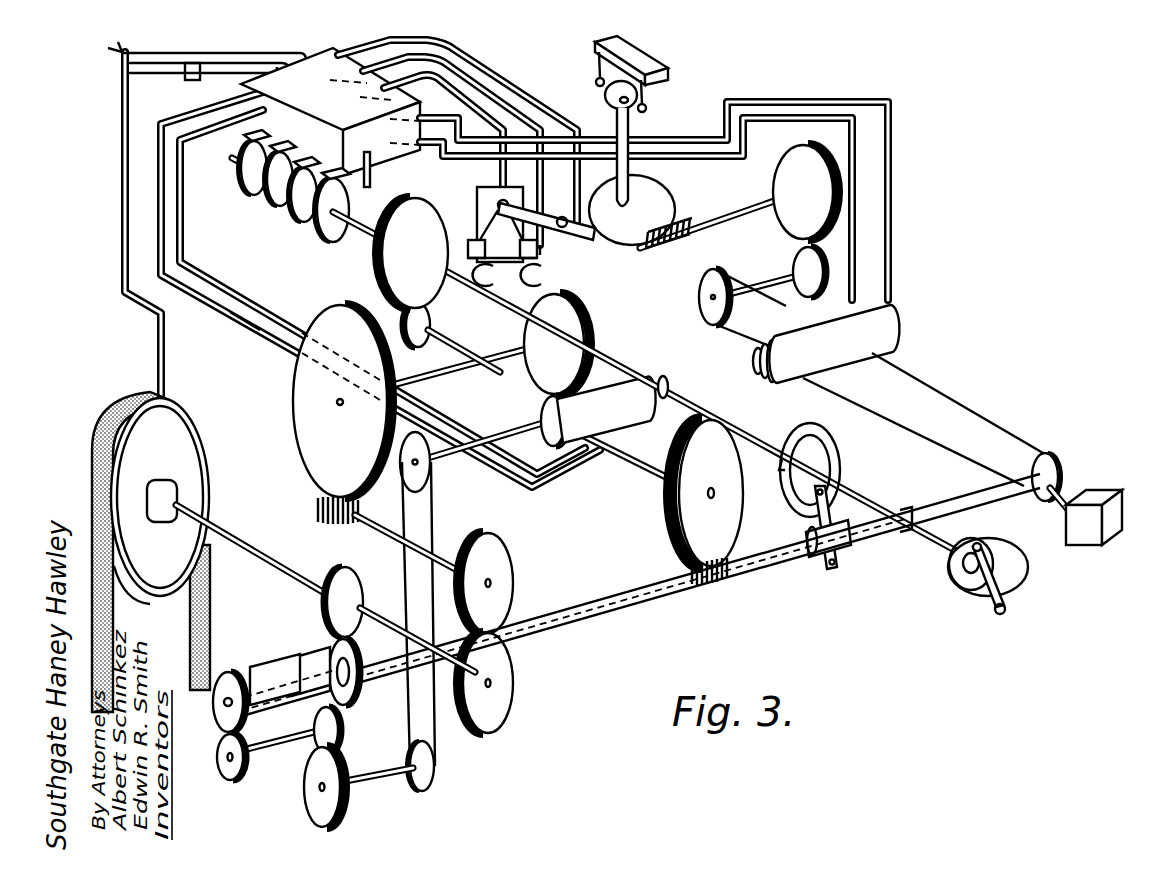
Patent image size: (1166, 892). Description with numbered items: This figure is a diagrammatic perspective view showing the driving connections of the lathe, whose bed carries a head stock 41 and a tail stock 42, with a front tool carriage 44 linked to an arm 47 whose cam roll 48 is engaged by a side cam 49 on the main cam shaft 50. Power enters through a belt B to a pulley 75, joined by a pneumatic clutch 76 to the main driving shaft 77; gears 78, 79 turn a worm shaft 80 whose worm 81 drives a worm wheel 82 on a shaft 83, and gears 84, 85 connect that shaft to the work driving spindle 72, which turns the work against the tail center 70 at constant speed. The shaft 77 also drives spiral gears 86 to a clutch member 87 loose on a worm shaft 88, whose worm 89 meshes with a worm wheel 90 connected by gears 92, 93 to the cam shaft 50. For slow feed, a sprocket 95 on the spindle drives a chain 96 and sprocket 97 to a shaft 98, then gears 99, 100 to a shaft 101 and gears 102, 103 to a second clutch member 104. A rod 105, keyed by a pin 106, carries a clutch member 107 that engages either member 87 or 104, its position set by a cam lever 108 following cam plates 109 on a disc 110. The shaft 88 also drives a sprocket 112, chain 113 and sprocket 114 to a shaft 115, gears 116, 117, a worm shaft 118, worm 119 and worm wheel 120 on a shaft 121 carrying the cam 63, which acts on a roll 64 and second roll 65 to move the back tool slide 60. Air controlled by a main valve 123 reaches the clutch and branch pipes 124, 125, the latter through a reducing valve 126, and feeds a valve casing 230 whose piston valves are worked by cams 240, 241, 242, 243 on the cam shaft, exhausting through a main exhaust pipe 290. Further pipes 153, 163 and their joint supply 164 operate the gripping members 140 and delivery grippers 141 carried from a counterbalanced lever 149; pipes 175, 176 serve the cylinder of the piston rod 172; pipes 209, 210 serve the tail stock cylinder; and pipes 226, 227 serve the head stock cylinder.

The head stock 41 is at (600, 423).
The tail stock 42 is at (847, 360).
The front tool carriage 44 is at (1112, 490).
The arm 47 is at (990, 606).
The cam roll 48 is at (979, 545).
The side cam 49 is at (950, 573).
The main cam shaft 50 is at (360, 232).
The back tool slide 60 is at (594, 46).
The cam 63 is at (608, 96).
The cam follower or roll 64 is at (648, 108).
The second roll 65 is at (596, 82).
The tail center 70 is at (752, 362).
The work driving spindle 72 is at (663, 378).
The pulley 75 is at (136, 598).
The pneumatic clutch 76 is at (186, 460).
The main driving shaft 77 is at (250, 553).
The gear 78 is at (515, 681).
The gear 79 is at (510, 578).
The worm shaft 80 is at (385, 537).
The worm 81 is at (330, 520).
The worm wheel 82 is at (300, 421).
The shaft 83 is at (464, 371).
The gear 84 is at (584, 326).
The gear 85 is at (540, 415).
The spiral gears 86 is at (360, 592).
The clutch member 87 is at (340, 650).
The worm shaft 88 is at (362, 660).
The worm 89 is at (716, 580).
The worm wheel 90 is at (666, 516).
The gear 92 is at (426, 320).
The gear 93 is at (382, 267).
The sprocket 95 is at (430, 472).
The chain 96 is at (435, 517).
The sprocket 97 is at (436, 766).
The shaft 98 is at (380, 782).
The gear 99 is at (305, 795).
The gear 100 is at (343, 728).
The shaft 101 is at (283, 745).
The gear 102 is at (218, 762).
The gear 103 is at (218, 701).
The second clutch member 104 is at (252, 677).
The rod 105 is at (566, 600).
The pin 106 is at (848, 546).
The clutch member 107 is at (285, 660).
The cam lever 108 is at (818, 526).
The cam plates 109 is at (840, 445).
The disc 110 is at (809, 430).
The sprocket 112 is at (1056, 467).
The chain 113 is at (940, 396).
The sprocket 114 is at (710, 294).
The shaft 115 is at (768, 280).
The gear 116 is at (813, 294).
The gear 117 is at (785, 178).
The worm shaft 118 is at (718, 224).
The worm 119 is at (665, 246).
The worm wheel 120 is at (650, 206).
The shaft 121 is at (630, 124).
The main valve 123 is at (108, 50).
The branch pipe 124 is at (166, 54).
The branch pipe 125 is at (160, 68).
The reducing valve 126 is at (193, 80).
The gripping members 140 is at (505, 310).
The delivery grippers 141 is at (550, 270).
The counterbalanced lever 149 is at (549, 215).
The pipe 153 is at (477, 202).
The pipe 163 is at (533, 160).
The joint air supply pipe 164 is at (452, 82).
The piston rod 172 is at (120, 214).
The air pipe 175 is at (483, 93).
The air pipe 176 is at (533, 106).
The pipe 209 is at (477, 162).
The pipe 210 is at (458, 128).
The pipe 226 is at (180, 228).
The pipe 227 is at (240, 322).
The valve casing 230 is at (340, 116).
The cam 240 is at (272, 200).
The cam 241 is at (300, 222).
The cam 242 is at (330, 243).
The cam 243 is at (243, 180).
The main exhaust pipe 290 is at (372, 174).
The belt B is at (92, 534).